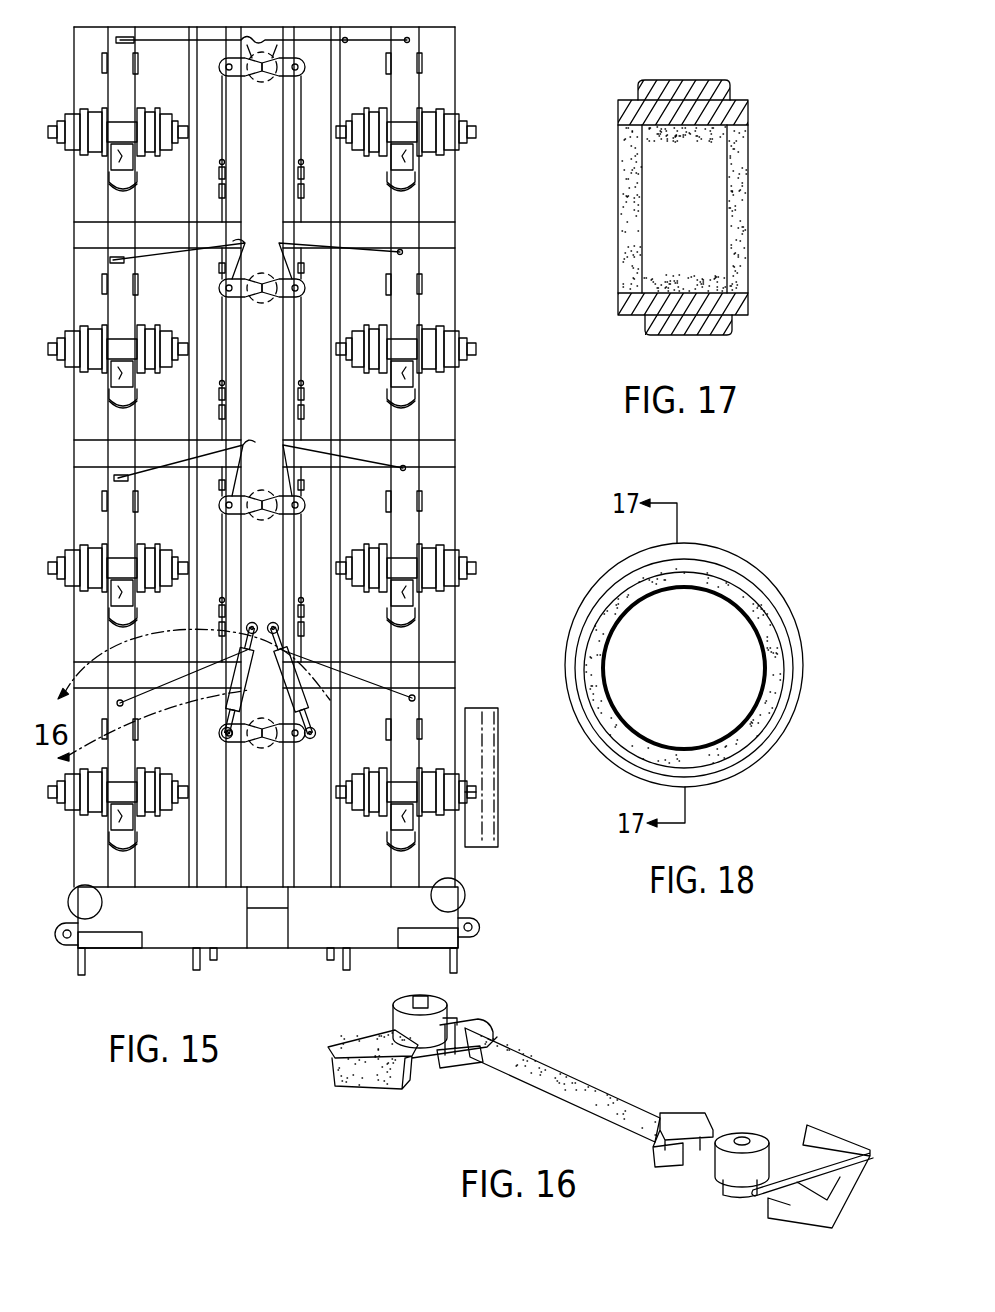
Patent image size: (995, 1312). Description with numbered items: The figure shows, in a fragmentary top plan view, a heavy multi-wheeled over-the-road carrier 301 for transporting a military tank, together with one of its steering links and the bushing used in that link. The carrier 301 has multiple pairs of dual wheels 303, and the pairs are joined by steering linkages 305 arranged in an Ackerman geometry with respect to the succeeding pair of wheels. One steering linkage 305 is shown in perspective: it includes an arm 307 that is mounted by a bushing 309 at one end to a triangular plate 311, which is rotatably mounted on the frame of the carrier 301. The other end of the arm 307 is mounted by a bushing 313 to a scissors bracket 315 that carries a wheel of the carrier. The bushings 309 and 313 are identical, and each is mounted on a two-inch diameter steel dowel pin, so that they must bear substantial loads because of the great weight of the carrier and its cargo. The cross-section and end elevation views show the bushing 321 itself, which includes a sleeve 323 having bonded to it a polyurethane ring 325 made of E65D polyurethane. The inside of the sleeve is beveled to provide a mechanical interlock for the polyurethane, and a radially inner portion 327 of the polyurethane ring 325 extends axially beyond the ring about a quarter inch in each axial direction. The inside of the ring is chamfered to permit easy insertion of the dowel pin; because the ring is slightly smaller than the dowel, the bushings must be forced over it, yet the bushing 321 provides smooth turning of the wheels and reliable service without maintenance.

In FIG. 15, the carrier 301 is at (531, 438).
In FIG. 15, the dual wheels 303 is at (470, 708).
In FIG. 15, the steering linkage 305 is at (170, 682).
In FIG. 16, the steering linkage 305 is at (668, 1050).
In FIG. 16, the arm 307 is at (560, 1093).
In FIG. 16, the bushing 309 is at (443, 1003).
In FIG. 16, the triangular plate 311 is at (357, 1077).
In FIG. 16, the bushing 313 is at (766, 1107).
In FIG. 16, the scissors bracket 315 is at (810, 1126).
In FIG. 17, the bushing 321 is at (645, 73).
In FIG. 17, the sleeve 323 is at (688, 80).
In FIG. 17, the polyurethane ring 325 is at (663, 130).
In FIG. 18, the polyurethane ring 325 is at (628, 577).
In FIG. 17, the radially inner portion 327 is at (637, 253).
In FIG. 18, the radially inner portion 327 is at (737, 588).